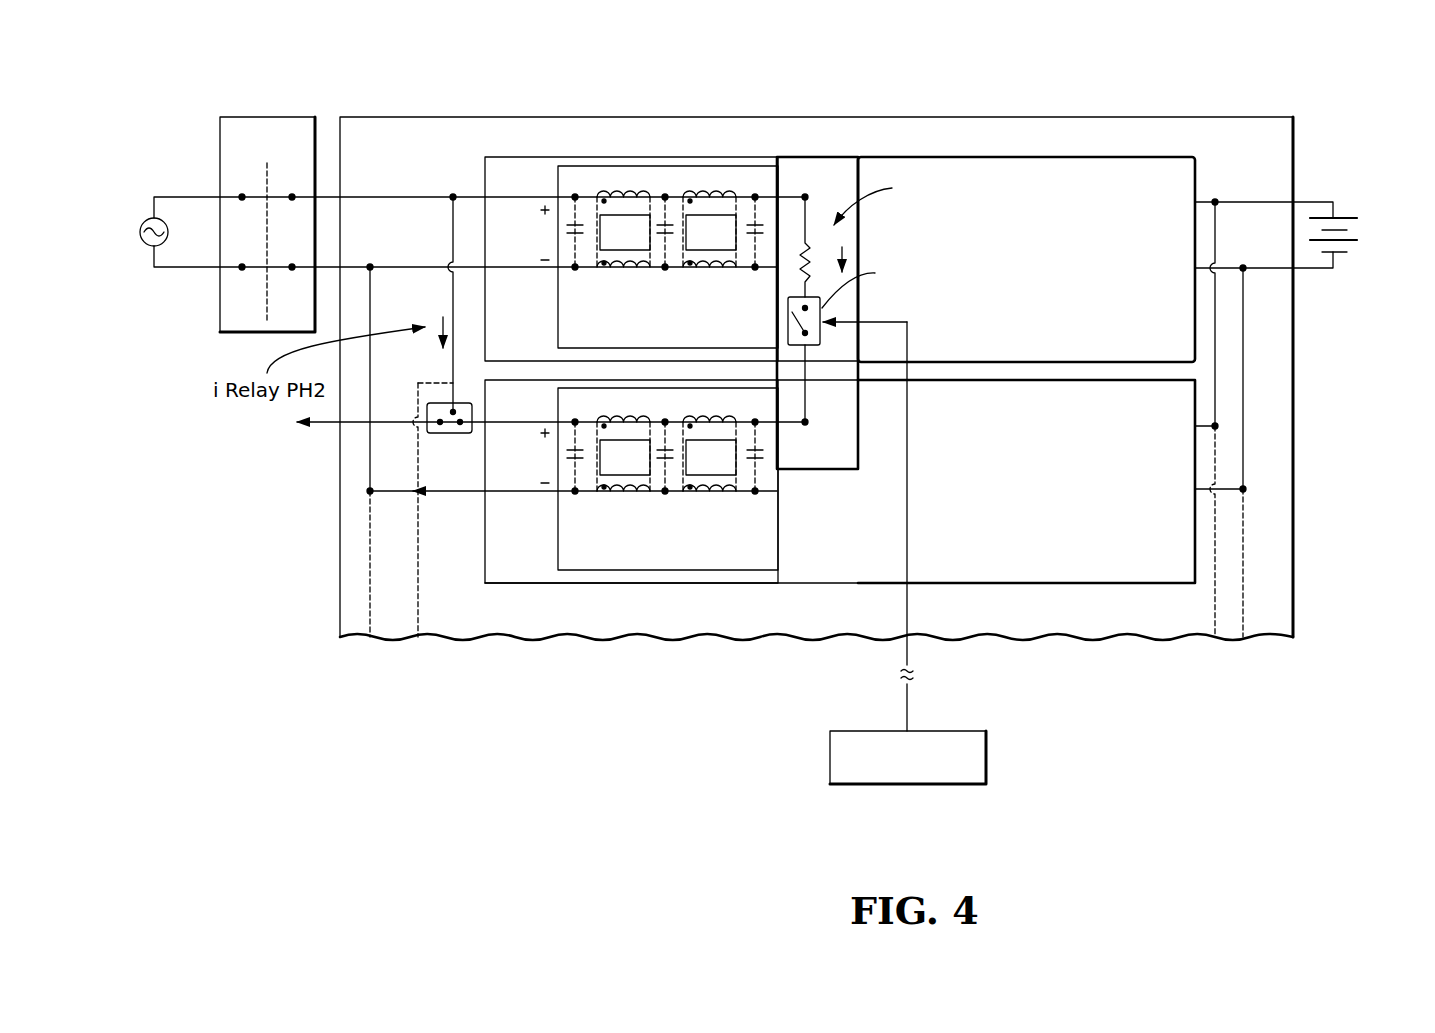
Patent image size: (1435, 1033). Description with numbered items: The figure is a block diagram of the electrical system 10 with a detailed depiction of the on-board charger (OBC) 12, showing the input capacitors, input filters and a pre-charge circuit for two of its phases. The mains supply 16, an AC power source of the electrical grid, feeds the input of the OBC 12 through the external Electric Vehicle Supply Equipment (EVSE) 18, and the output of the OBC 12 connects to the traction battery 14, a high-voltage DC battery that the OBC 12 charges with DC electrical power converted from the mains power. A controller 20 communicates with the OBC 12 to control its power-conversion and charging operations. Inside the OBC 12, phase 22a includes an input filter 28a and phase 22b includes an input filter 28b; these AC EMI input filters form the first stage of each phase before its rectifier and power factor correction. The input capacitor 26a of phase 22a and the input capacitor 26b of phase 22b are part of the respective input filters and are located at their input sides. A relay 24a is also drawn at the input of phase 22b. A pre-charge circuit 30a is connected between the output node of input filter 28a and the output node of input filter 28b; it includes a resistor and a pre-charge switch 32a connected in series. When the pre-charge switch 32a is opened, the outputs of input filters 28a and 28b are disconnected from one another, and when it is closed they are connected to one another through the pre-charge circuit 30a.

The electrical system 10 is at (1184, 48).
The on-board charger (OBC) 12 is at (812, 116).
The traction battery 14 is at (1343, 215).
The mains supply 16 is at (118, 215).
The Electric Vehicle Supply Equipment (EVSE) 18 is at (280, 116).
The controller 20 is at (945, 729).
The phase 22a is at (1083, 156).
The phase 22b is at (1083, 585).
The relay 24a is at (442, 402).
The input capacitor 26a is at (570, 270).
The input capacitor 26b is at (568, 498).
The input filter 28a is at (678, 157).
The input filter 28b is at (678, 583).
The pre-charge circuit 30a is at (847, 155).
The pre-charge switch 32a is at (789, 322).